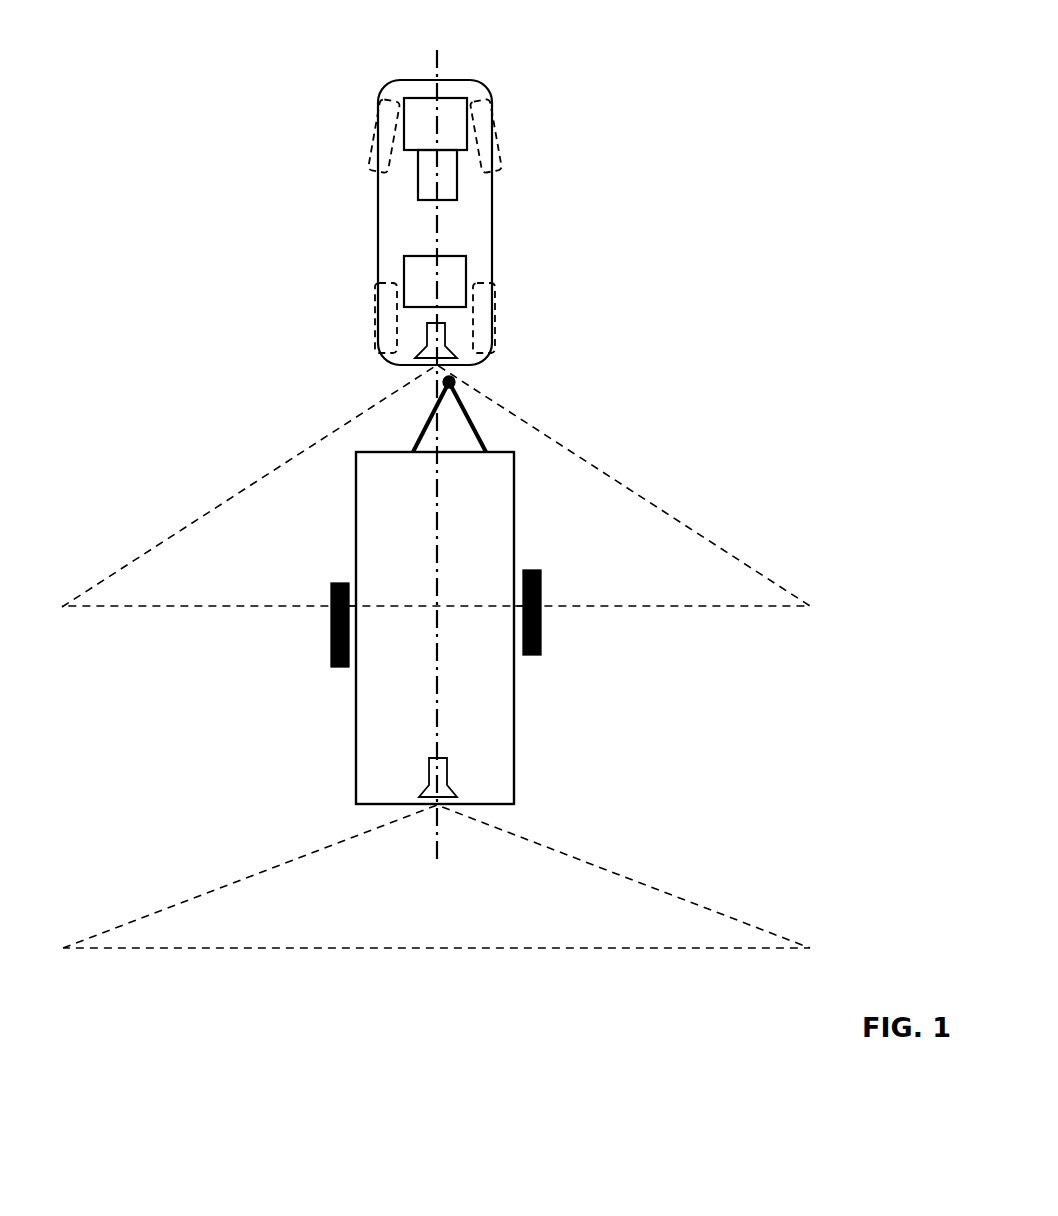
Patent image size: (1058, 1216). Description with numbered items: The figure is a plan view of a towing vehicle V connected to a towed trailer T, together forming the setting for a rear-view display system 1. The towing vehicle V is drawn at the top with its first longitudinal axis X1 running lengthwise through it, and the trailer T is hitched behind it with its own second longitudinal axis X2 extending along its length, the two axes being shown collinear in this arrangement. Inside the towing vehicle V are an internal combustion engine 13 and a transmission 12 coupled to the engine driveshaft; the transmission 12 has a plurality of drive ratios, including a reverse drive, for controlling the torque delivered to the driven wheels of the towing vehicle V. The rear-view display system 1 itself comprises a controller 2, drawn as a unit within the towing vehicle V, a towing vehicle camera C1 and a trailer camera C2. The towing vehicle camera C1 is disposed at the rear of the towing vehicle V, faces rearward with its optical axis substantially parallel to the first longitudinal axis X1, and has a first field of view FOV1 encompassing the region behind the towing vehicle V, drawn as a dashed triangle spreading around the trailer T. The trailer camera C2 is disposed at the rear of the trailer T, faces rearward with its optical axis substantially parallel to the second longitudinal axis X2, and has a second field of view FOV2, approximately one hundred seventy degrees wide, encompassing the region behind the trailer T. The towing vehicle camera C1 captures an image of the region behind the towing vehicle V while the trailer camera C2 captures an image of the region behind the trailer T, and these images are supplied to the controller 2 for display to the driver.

The rear-view display system 1 is at (798, 193).
The towing vehicle V is at (521, 89).
The trailer T is at (533, 490).
The internal combustion engine 13 is at (457, 120).
The transmission 12 is at (457, 180).
The controller 2 is at (444, 296).
The towing vehicle camera C1 is at (452, 353).
The trailer camera C2 is at (451, 805).
The first longitudinal axis X1 is at (456, 321).
The second longitudinal axis X2 is at (459, 756).
The first field of view FOV1 is at (436, 486).
The second field of view FOV2 is at (436, 876).